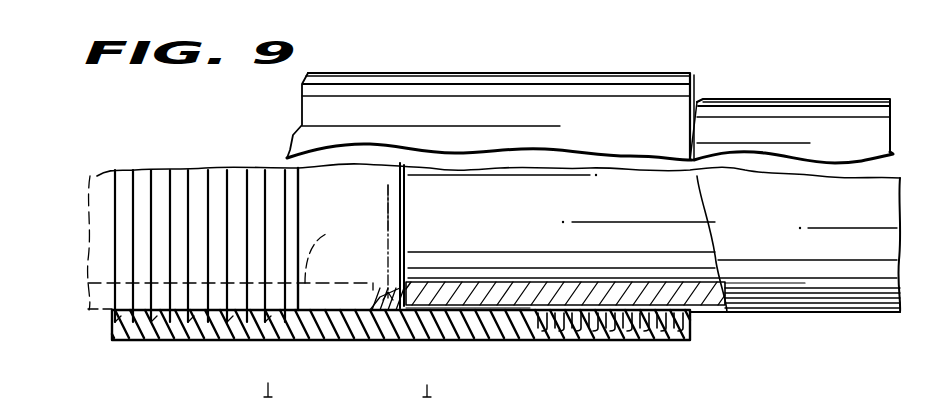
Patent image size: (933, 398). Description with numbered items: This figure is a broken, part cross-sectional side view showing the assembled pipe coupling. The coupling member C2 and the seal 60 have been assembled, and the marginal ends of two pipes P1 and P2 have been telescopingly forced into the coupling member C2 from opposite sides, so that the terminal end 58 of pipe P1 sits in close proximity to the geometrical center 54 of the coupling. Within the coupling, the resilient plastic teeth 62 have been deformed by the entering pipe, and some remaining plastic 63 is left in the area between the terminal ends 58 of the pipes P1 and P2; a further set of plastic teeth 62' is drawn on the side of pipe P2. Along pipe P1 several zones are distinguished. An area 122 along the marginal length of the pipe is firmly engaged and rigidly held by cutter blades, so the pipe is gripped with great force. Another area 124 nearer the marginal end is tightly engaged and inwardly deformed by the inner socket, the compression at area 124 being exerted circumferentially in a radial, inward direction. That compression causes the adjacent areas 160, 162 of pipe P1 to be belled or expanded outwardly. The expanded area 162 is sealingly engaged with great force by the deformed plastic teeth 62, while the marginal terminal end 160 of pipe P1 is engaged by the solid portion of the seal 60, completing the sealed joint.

The coupling member C2 is at (519, 73).
The pipe P1 is at (728, 101).
The pipe P2 is at (325, 256).
The geometrical center 54 is at (391, 207).
The terminal end 58 is at (398, 172).
The seal 60 is at (496, 276).
The plastic teeth 62 is at (565, 274).
The ribbed sleeve 62' is at (223, 245).
The remaining plastic 63 is at (370, 297).
The area 122 is at (905, 318).
The area 124 is at (800, 318).
The marginal terminal end 160 is at (530, 347).
The expanded area 162 is at (690, 347).